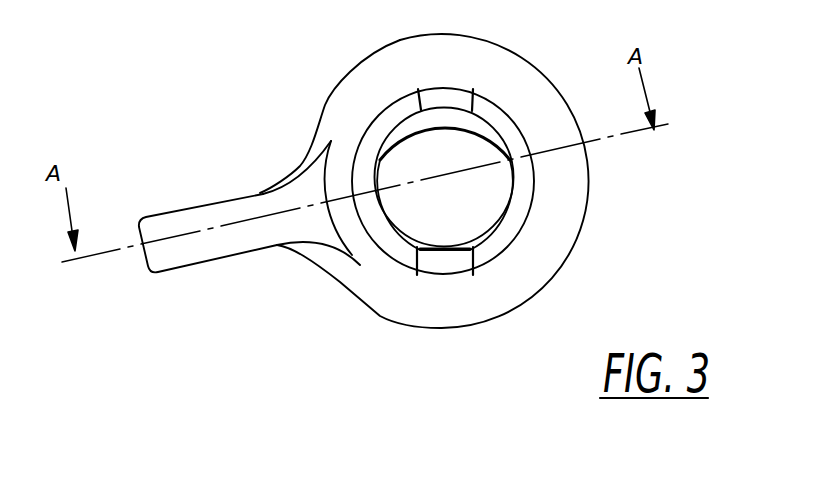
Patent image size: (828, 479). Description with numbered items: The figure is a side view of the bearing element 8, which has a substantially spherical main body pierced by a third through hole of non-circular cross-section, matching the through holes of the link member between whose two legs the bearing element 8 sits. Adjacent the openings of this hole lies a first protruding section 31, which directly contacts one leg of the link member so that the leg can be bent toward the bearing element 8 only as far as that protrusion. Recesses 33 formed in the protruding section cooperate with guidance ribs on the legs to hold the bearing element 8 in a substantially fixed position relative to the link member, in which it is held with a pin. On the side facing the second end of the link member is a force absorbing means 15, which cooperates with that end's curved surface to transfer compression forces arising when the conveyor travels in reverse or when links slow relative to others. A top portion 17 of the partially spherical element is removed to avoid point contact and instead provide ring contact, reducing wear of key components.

The bearing element 8 is at (354, 92).
The force absorbing means 15 is at (243, 217).
The top portion 17 is at (582, 182).
The first protruding section 31 is at (403, 107).
The recesses 33 is at (443, 96).